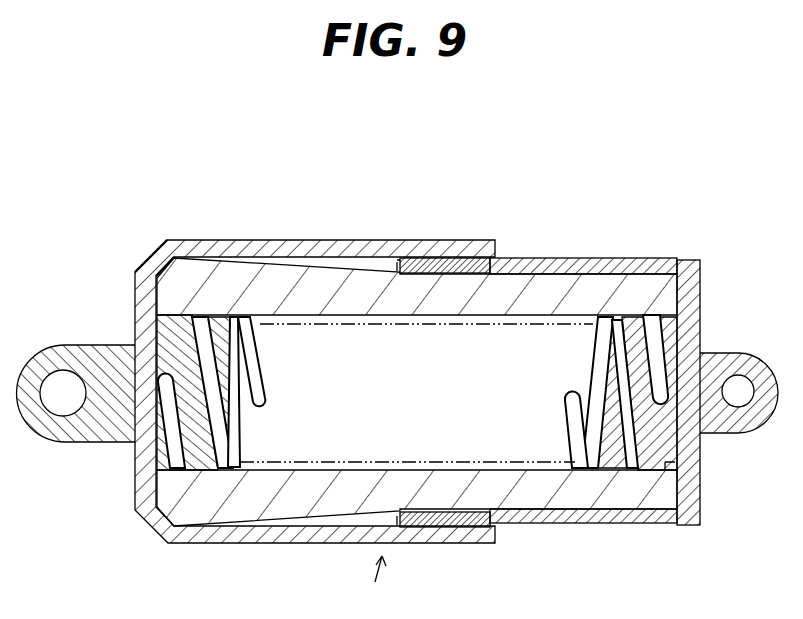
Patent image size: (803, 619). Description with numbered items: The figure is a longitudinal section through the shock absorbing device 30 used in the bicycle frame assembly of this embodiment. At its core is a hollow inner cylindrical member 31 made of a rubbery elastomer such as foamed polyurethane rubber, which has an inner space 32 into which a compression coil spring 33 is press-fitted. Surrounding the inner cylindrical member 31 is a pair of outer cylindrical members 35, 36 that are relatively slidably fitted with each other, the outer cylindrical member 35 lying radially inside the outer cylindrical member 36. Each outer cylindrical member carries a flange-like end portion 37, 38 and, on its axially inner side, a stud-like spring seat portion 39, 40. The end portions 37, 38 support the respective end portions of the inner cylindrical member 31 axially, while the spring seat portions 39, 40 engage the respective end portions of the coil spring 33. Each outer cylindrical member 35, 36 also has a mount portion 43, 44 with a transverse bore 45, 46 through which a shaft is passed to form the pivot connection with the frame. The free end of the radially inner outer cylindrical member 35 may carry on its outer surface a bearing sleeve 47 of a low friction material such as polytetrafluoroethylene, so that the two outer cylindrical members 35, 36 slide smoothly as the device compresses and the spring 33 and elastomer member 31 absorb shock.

The shock absorbing device 30 is at (366, 587).
The hollow inner cylindrical member 31 is at (543, 285).
The inner space 32 is at (497, 413).
The compression coil spring 33 is at (173, 434).
The outer cylindrical member 35 is at (618, 262).
The outer cylindrical member 36 is at (303, 239).
The flange-like end portion 37 is at (700, 288).
The flange-like end portion 38 is at (153, 257).
The stud-like spring seat portion 39 is at (667, 470).
The stud-like spring seat portion 40 is at (173, 343).
The mount portion 43 is at (739, 396).
The mount portion 44 is at (71, 390).
The transverse bore 45 is at (740, 398).
The transverse bore 46 is at (52, 396).
The bearing sleeve 47 is at (446, 257).